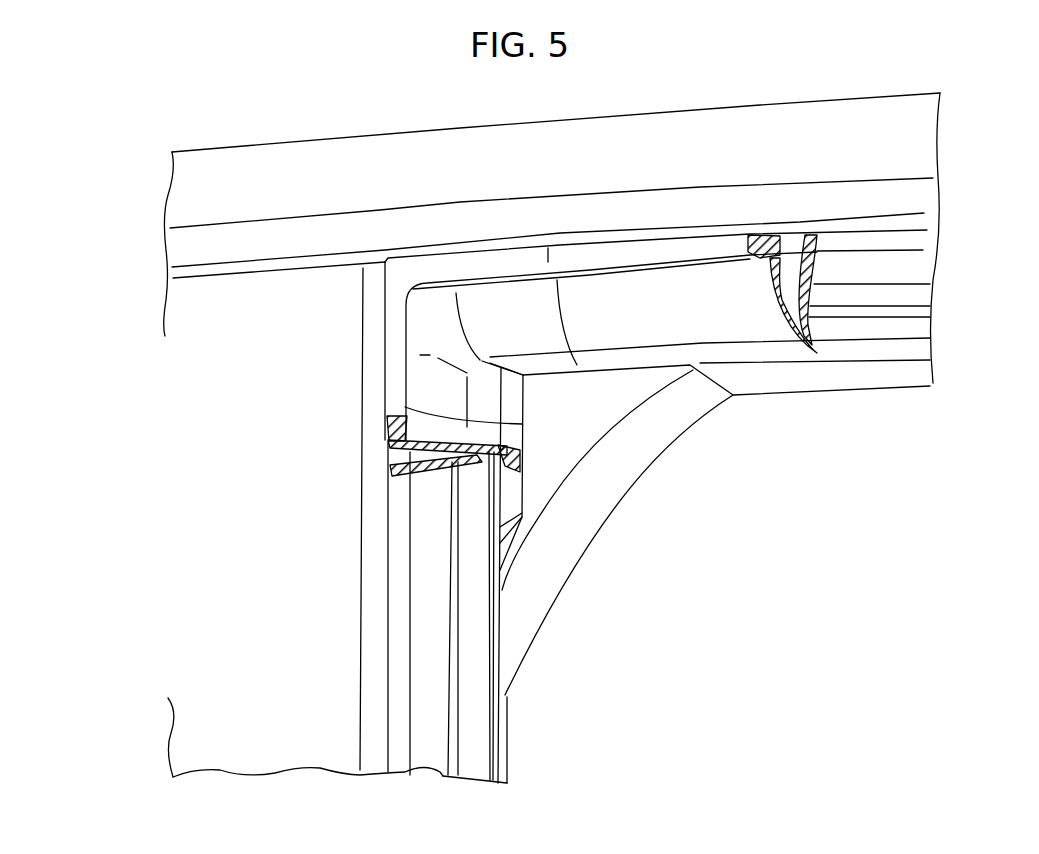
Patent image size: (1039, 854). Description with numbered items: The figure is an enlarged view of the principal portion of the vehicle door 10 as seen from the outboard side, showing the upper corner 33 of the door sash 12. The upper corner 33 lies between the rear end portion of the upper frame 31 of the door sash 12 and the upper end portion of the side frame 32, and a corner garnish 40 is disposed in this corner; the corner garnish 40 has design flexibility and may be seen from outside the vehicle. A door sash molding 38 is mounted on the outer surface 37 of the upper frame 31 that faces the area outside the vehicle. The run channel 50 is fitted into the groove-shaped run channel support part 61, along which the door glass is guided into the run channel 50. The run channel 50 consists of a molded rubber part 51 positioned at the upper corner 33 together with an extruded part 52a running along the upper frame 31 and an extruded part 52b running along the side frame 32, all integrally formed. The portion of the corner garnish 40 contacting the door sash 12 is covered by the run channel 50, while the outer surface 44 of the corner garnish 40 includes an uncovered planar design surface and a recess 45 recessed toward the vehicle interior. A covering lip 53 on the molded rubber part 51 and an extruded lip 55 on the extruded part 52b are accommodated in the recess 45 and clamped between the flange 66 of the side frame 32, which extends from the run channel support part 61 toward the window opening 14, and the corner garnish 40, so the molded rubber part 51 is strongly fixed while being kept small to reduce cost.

The vehicle door 10 is at (134, 145).
The door sash 12 is at (217, 373).
The window opening 14 is at (500, 746).
The upper frame 31 is at (914, 202).
The side frame 32 is at (193, 503).
The upper corner 33 is at (618, 544).
The outer surface 37 is at (866, 192).
The door sash molding 38 is at (826, 114).
The corner garnish 40 is at (589, 489).
The outer surface 44 is at (597, 399).
The recess 45 is at (523, 483).
The run channel 50 is at (434, 304).
The molded rubber part 51 is at (490, 294).
The extruded part 52a is at (638, 287).
The extruded part 52b is at (385, 407).
The covering lip 53 is at (513, 405).
The extruded lip 55 is at (514, 494).
The run channel support part 61 is at (902, 248).
The flange 66 is at (499, 530).